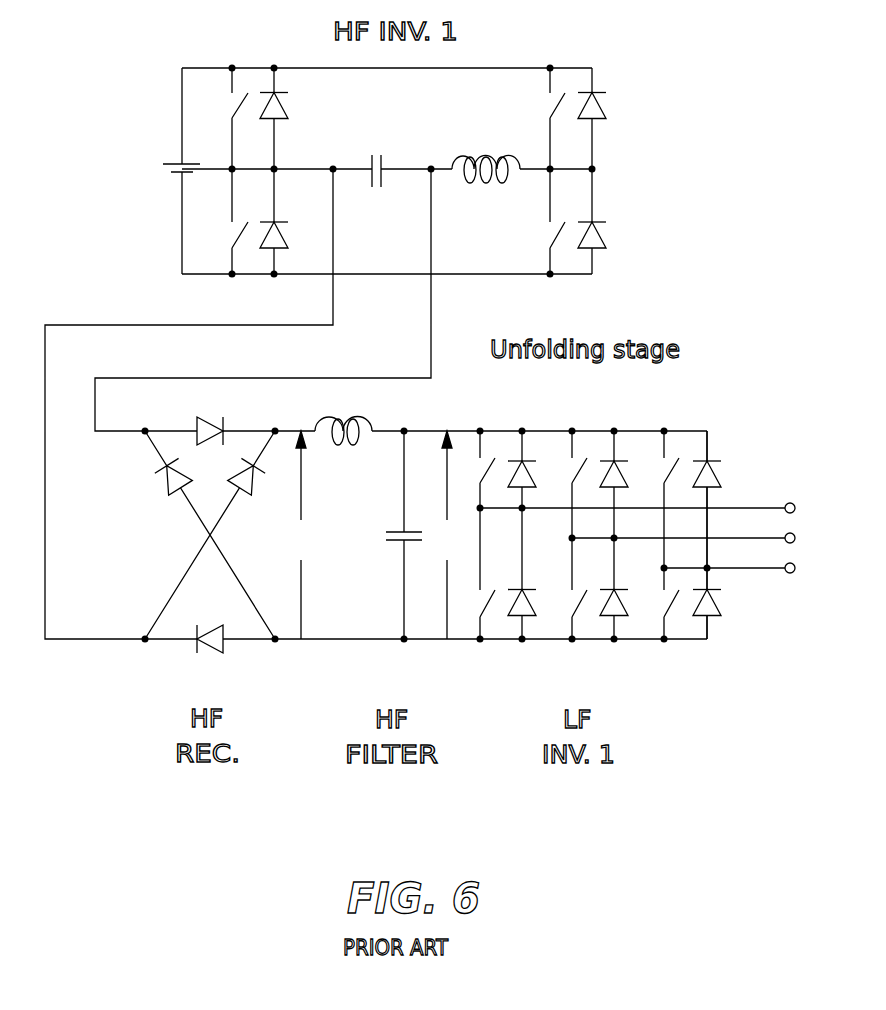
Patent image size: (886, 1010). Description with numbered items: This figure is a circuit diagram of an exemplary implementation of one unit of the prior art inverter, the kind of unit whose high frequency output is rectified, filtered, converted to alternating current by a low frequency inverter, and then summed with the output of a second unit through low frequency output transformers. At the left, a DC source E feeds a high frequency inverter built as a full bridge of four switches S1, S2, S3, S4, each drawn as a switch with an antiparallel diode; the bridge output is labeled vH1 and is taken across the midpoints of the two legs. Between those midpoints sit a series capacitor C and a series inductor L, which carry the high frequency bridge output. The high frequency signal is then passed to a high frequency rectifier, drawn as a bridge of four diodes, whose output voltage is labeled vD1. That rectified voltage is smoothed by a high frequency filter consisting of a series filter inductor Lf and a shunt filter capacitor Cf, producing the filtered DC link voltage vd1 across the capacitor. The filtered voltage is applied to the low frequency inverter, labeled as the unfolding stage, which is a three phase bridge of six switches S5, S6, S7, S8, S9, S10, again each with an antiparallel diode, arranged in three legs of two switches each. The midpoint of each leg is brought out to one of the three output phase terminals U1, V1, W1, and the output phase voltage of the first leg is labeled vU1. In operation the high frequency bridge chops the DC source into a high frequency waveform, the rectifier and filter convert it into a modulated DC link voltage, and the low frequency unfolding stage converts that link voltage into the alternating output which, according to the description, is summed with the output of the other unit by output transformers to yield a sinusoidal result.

The DC voltage source E is at (164, 169).
The switch S1 of HF inverter S1 is at (241, 118).
The switch S2 of HF inverter S2 is at (241, 221).
The switch S3 of HF inverter S3 is at (559, 118).
The switch S4 of HF inverter S4 is at (559, 221).
The resonant capacitor C is at (375, 152).
The resonant inductor L is at (486, 150).
The HF inverter output voltage vH1 is at (238, 404).
The rectifier output voltage vD1 is at (305, 535).
The filter inductor Lf is at (343, 455).
The filter capacitor Cf is at (388, 535).
The filtered DC voltage vd1 is at (449, 535).
The switch S5 of LF inverter S5 is at (503, 446).
The switch S6 of LF inverter S6 is at (503, 599).
The switch S7 of LF inverter S7 is at (595, 461).
The switch S8 of LF inverter S8 is at (600, 588).
The switch S9 of LF inverter S9 is at (688, 476).
The switch S10 of LF inverter S10 is at (688, 629).
The output phase terminal U1 is at (655, 511).
The output phase terminal V1 is at (701, 541).
The output phase terminal W1 is at (750, 571).
The output phase voltage vU1 is at (757, 480).